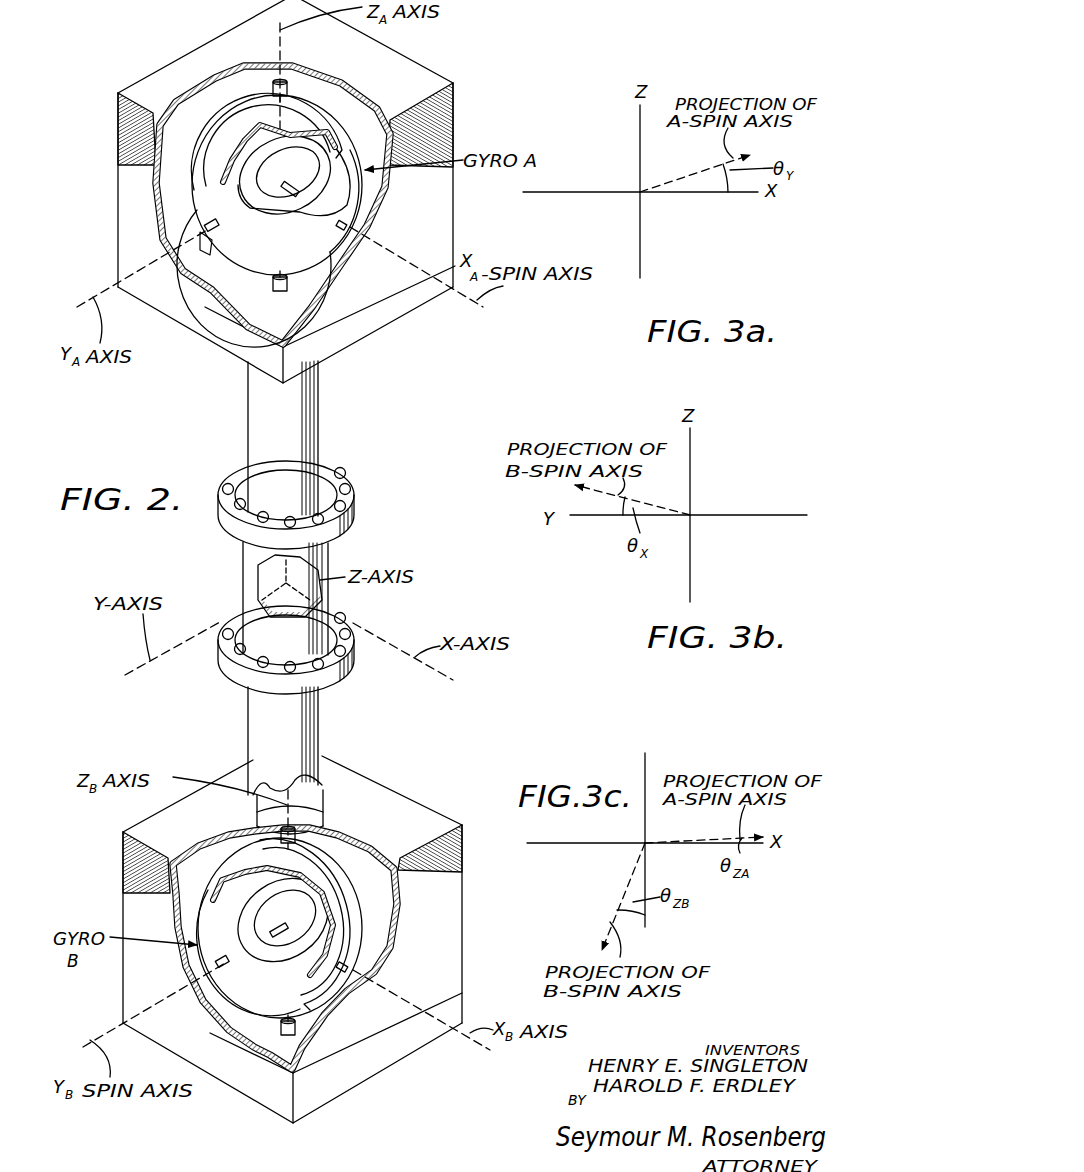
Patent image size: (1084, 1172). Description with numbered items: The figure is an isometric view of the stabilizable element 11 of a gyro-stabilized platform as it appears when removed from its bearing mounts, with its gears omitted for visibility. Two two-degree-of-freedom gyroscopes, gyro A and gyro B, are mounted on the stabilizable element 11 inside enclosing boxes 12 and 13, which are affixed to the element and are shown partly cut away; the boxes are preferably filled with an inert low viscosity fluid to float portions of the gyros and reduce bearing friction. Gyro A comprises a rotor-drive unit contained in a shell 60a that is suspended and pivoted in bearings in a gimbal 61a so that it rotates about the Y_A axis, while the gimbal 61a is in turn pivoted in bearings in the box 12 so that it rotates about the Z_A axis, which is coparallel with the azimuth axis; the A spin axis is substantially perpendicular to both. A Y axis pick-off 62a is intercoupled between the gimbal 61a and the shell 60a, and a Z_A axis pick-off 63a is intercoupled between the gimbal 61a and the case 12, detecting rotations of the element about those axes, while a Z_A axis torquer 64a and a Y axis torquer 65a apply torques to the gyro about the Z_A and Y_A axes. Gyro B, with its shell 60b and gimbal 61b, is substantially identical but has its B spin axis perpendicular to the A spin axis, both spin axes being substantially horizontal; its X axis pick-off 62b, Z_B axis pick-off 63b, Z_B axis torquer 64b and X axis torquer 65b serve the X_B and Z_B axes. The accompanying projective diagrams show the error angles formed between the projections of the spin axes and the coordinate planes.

The stabilizable element 11 is at (255, 425).
The box 12 is at (368, 328).
The box 13 is at (462, 905).
The shell 60a is at (340, 220).
The gimbal 61a is at (302, 103).
The Y axis pick-off 62a is at (317, 148).
The Z_A axis pick-off 63a is at (277, 291).
The Z_A axis torquer 64a is at (271, 91).
The Y axis torquer 65a is at (210, 252).
The shell 60b is at (255, 987).
The gimbal 61b is at (310, 867).
The X axis pick-off 62b is at (340, 990).
The Z_B axis pick-off 63b is at (287, 1036).
The Z_B axis torquer 64b is at (280, 832).
The X axis torquer 65b is at (215, 891).